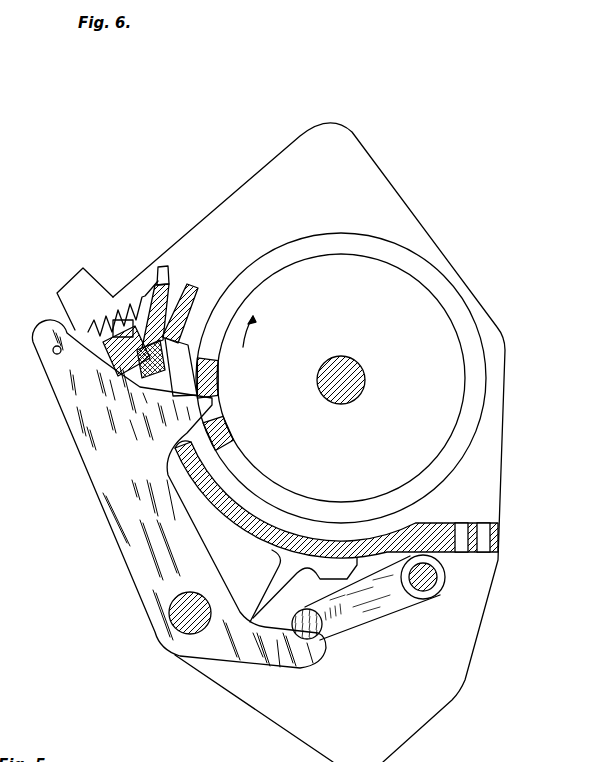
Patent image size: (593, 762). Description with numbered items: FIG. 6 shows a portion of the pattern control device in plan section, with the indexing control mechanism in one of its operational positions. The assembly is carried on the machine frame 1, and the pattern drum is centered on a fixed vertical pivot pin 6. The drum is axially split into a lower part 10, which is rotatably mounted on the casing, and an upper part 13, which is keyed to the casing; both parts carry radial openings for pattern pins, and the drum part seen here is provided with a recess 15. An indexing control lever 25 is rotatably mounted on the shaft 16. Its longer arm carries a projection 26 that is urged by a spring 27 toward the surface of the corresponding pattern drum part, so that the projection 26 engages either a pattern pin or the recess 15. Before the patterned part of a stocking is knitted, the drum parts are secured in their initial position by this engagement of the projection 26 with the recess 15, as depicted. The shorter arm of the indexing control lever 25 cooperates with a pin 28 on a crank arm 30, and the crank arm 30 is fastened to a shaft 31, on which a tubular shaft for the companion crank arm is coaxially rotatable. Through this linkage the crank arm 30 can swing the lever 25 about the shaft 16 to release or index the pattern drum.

The machine frame 1 is at (385, 186).
The fixed vertical pivot pin 6 is at (366, 380).
The lower part of the pattern drum 10 is at (304, 244).
The upper part of the pattern drum 13 is at (290, 502).
The recess 15 is at (220, 418).
The shaft 16 is at (180, 621).
The indexing control lever 25 is at (108, 502).
The projection 26 is at (212, 402).
The spring 27 is at (70, 332).
The pin 28 is at (325, 636).
The crank arm 30 is at (388, 606).
The shaft 31 is at (441, 585).